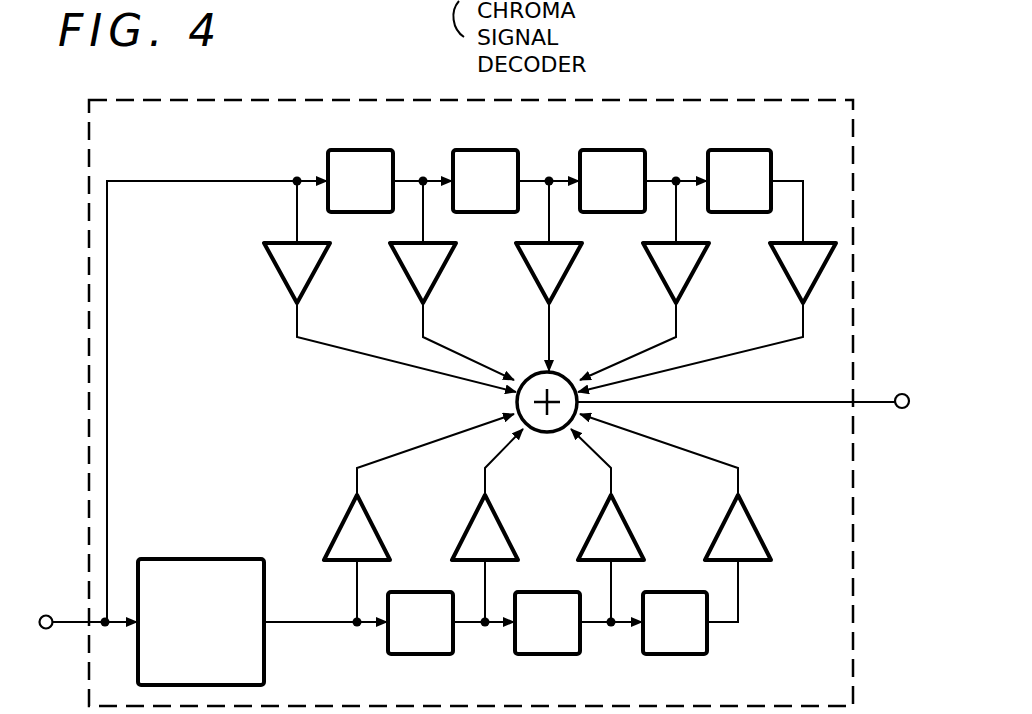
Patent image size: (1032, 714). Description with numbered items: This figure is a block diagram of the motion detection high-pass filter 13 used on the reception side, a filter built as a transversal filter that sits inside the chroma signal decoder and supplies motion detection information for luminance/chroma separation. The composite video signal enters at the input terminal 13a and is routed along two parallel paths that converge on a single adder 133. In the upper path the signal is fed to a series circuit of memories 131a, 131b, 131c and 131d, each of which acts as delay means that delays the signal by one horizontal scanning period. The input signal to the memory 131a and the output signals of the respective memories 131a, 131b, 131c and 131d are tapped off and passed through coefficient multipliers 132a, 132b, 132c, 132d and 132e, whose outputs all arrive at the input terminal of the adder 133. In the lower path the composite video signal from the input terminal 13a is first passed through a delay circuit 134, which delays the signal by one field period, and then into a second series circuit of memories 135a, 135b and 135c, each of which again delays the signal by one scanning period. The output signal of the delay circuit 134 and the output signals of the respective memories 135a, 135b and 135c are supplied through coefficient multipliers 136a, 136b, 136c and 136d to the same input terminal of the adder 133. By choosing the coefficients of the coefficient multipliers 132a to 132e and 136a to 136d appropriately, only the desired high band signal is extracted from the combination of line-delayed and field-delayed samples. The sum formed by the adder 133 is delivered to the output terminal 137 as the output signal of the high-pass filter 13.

The motion detection high-pass filter 13 is at (704, 100).
The input terminal 13a is at (47, 615).
The memory 131a is at (343, 150).
The memory 131b is at (484, 150).
The memory 131c is at (597, 150).
The memory 131d is at (737, 150).
The coefficient multiplier 132a is at (311, 282).
The coefficient multiplier 132b is at (438, 282).
The coefficient multiplier 132c is at (565, 280).
The coefficient multiplier 132d is at (692, 282).
The coefficient multiplier 132e is at (810, 300).
The adder 133 is at (541, 434).
The delay circuit 134 is at (220, 559).
The memory 135a is at (409, 656).
The memory 135b is at (539, 656).
The memory 135c is at (664, 656).
The coefficient multiplier 136a is at (378, 538).
The coefficient multiplier 136b is at (506, 538).
The coefficient multiplier 136c is at (640, 536).
The coefficient multiplier 136d is at (767, 536).
The output terminal 137 is at (903, 408).